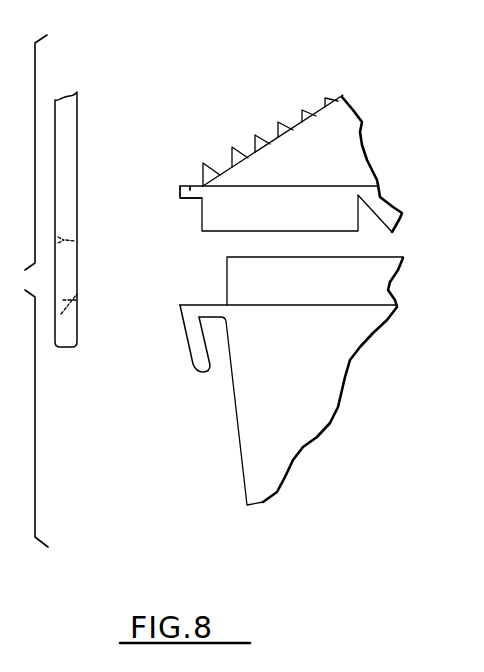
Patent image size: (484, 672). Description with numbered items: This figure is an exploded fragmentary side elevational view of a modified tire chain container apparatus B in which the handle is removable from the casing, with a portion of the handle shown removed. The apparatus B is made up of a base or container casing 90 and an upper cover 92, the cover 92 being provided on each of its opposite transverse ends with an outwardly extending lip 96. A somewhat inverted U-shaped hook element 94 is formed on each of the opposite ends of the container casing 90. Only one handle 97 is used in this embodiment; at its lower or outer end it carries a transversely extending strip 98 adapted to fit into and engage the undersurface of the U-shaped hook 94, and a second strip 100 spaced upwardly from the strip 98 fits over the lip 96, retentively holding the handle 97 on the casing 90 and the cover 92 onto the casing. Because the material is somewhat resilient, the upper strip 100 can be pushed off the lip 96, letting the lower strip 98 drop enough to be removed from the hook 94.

The handle 97 is at (80, 83).
The second strip 100 is at (86, 246).
The transversely extending strip 98 is at (90, 293).
The tire chain container apparatus B is at (276, 84).
The outwardly extending lip 96 is at (190, 185).
The upper cover 92 is at (251, 138).
The container casing 90 is at (233, 409).
The inverted U-shaped hook element 94 is at (207, 352).